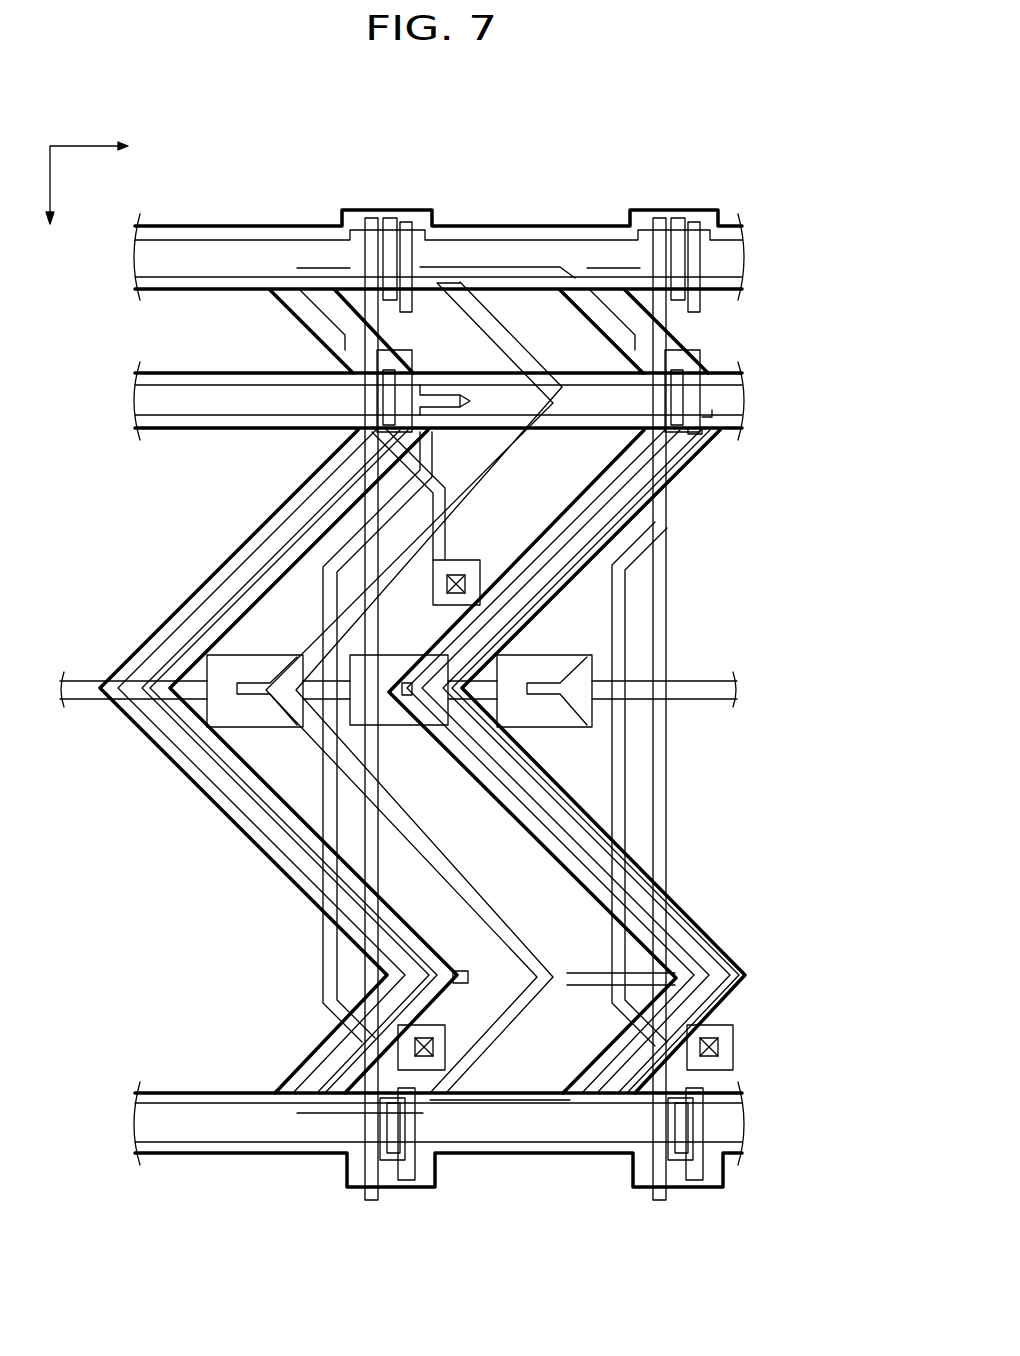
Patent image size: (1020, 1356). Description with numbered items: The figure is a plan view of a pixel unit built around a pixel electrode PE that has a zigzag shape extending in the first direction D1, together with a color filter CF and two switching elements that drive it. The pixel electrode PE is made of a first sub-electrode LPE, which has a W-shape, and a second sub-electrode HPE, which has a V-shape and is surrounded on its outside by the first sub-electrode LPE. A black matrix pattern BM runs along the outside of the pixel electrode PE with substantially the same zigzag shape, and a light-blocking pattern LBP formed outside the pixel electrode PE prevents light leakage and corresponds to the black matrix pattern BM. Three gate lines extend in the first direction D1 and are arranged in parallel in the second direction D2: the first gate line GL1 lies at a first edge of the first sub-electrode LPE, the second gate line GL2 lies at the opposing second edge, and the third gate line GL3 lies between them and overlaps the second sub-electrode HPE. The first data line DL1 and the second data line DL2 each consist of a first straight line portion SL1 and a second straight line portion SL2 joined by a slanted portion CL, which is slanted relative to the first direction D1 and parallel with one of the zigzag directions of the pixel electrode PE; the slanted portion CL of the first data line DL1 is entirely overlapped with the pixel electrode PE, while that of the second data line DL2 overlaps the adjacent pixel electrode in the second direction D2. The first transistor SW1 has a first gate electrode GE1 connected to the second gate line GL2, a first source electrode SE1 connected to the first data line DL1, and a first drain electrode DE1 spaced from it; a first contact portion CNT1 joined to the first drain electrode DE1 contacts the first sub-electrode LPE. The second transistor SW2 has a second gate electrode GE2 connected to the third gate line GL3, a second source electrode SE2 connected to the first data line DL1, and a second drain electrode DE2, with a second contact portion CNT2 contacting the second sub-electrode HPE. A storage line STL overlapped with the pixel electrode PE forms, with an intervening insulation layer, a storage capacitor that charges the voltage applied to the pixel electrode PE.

The second transistor SW2 is at (336, 285).
The second drain electrode DE2 is at (408, 400).
The second source electrode SE2 is at (378, 385).
The second gate electrode GE2 is at (338, 450).
The first data line DL1 is at (368, 217).
The pixel electrode PE is at (413, 607).
The first sub-electrode LPE is at (488, 445).
The second sub-electrode HPE is at (568, 445).
The second data line DL2 is at (656, 217).
The first gate line GL1 is at (733, 264).
The third gate line GL3 is at (733, 403).
The second gate line GL2 is at (735, 1135).
The first straight line portion SL1 is at (350, 492).
The slanted portion CL is at (345, 540).
The second straight line portion SL2 is at (327, 607).
The second contact portion CNT2 is at (477, 583).
The first contact portion CNT1 is at (447, 1048).
The storage line STL is at (582, 713).
The light-blocking pattern LBP is at (560, 817).
The color filter CF is at (577, 899).
The black matrix pattern BM is at (710, 945).
The first transistor SW1 is at (437, 1198).
The first source electrode SE1 is at (393, 1175).
The first drain electrode DE1 is at (400, 1133).
The first gate electrode GE1 is at (430, 1128).
The first direction D1 is at (50, 233).
The second direction D2 is at (105, 179).